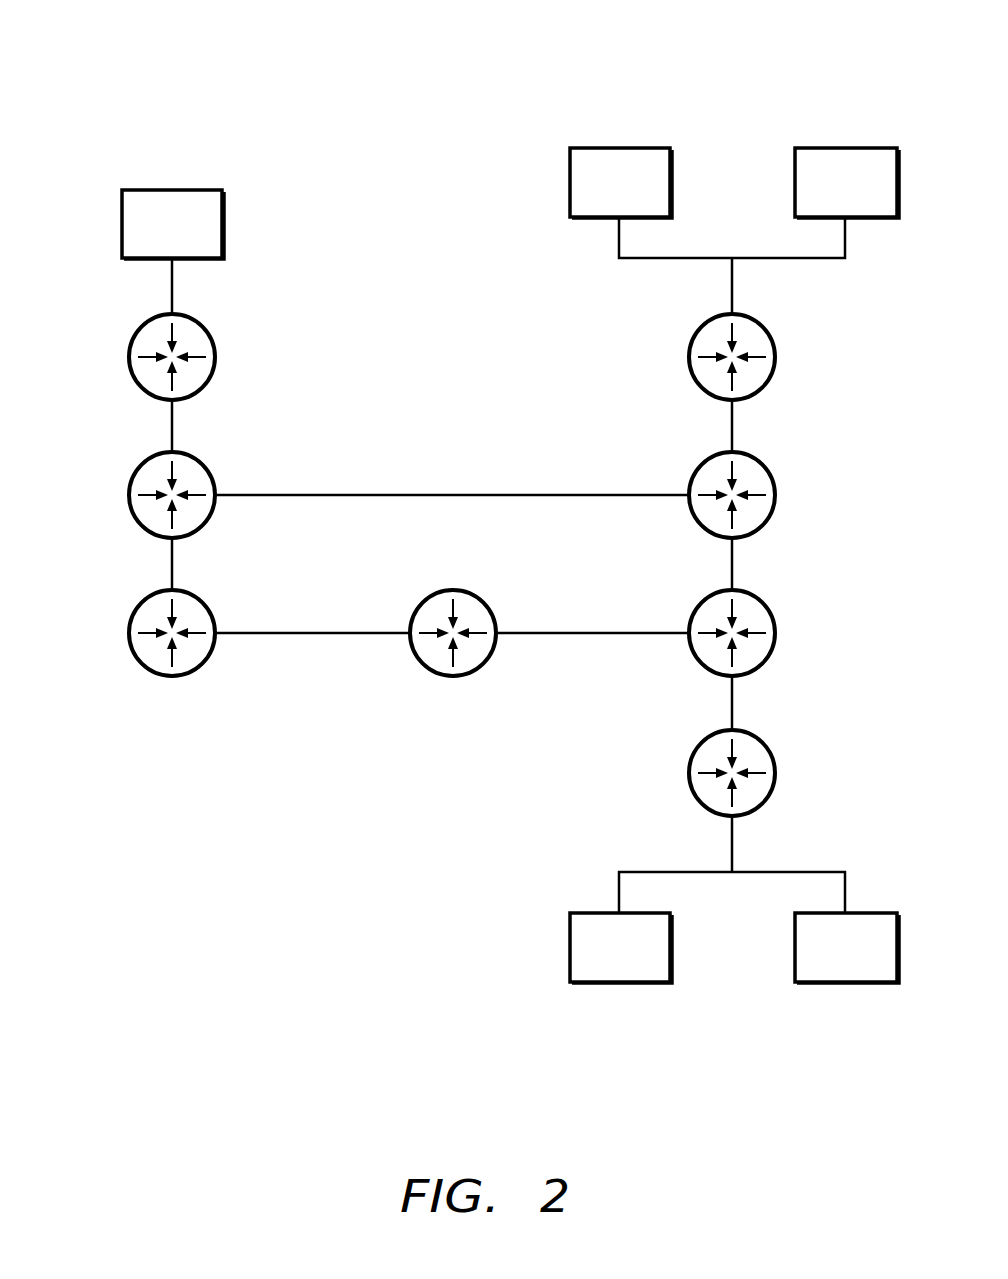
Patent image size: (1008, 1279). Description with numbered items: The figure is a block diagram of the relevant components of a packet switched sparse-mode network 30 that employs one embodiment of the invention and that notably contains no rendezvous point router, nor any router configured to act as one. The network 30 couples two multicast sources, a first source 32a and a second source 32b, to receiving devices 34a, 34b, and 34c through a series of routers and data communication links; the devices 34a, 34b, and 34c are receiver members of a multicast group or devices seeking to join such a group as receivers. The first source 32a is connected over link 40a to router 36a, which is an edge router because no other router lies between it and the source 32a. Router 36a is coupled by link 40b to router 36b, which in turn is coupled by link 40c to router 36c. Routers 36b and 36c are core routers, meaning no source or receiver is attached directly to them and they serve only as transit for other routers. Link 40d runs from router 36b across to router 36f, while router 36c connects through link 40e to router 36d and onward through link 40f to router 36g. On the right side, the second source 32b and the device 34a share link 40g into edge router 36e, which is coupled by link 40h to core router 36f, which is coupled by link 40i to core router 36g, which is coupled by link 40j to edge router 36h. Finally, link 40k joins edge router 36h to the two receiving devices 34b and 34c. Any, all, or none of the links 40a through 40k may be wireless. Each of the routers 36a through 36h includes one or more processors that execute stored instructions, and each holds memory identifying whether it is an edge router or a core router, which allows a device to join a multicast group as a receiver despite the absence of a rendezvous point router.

The SM network 30 is at (102, 40).
The source 32a is at (222, 216).
The source 32b is at (628, 148).
The device 34a is at (840, 148).
The device 34b is at (626, 984).
The device 34c is at (853, 984).
The edge router 36a is at (213, 346).
The core router 36b is at (213, 475).
The core router 36c is at (213, 612).
The router 36d is at (493, 612).
The edge router 36e is at (773, 352).
The core router 36f is at (773, 492).
The core router 36g is at (773, 632).
The edge router 36h is at (773, 772).
The data communication link 40a is at (168, 283).
The data communication link 40b is at (168, 421).
The data communication link 40c is at (168, 560).
The data communication link 40d is at (438, 494).
The data communication link 40e is at (287, 638).
The data communication link 40f is at (558, 638).
The data communication link 40g is at (728, 282).
The data communication link 40h is at (728, 422).
The data communication link 40i is at (730, 564).
The data communication link 40j is at (730, 707).
The data communication link 40k is at (728, 842).